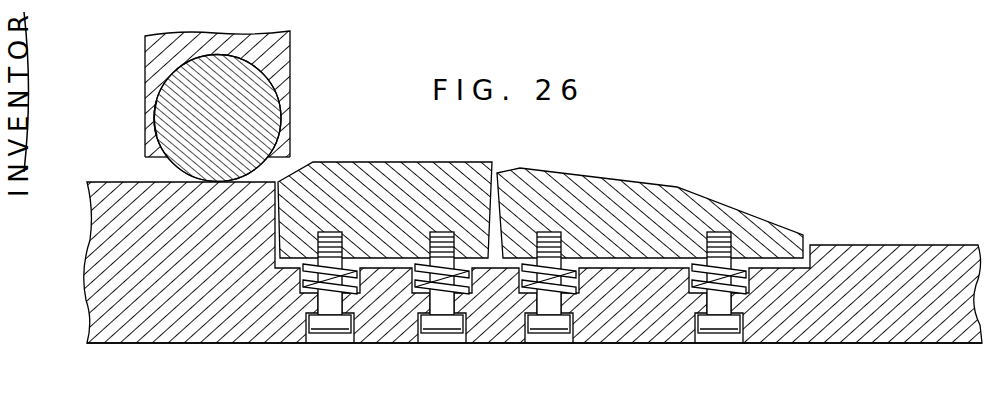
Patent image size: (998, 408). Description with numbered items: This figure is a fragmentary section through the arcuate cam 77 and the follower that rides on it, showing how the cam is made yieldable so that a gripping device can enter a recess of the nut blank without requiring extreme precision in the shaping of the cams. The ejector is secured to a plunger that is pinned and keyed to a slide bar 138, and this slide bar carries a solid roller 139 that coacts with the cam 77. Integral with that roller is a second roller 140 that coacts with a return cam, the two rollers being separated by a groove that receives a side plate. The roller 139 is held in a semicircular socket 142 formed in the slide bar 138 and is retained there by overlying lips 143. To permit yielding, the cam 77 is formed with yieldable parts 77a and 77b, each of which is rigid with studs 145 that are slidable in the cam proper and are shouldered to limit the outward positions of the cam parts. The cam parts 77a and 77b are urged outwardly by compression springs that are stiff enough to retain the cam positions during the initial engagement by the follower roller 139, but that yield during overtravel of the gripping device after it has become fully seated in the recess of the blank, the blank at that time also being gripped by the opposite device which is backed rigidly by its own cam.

The arcuate cam 77 is at (110, 182).
The yieldable cam part 77a is at (468, 166).
The yieldable cam part 77b is at (658, 194).
The slide bar 138 is at (284, 56).
The solid roller 139 is at (167, 123).
The roller 140 is at (345, 270).
The semicircular socket 142 is at (279, 98).
The overlying lips 143 is at (286, 143).
The studs 145 is at (340, 327).